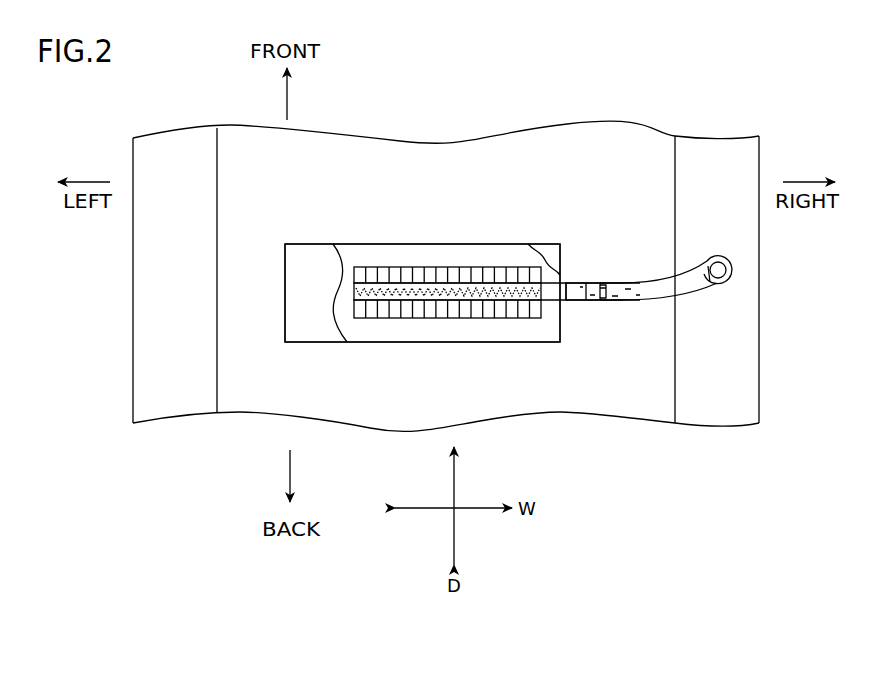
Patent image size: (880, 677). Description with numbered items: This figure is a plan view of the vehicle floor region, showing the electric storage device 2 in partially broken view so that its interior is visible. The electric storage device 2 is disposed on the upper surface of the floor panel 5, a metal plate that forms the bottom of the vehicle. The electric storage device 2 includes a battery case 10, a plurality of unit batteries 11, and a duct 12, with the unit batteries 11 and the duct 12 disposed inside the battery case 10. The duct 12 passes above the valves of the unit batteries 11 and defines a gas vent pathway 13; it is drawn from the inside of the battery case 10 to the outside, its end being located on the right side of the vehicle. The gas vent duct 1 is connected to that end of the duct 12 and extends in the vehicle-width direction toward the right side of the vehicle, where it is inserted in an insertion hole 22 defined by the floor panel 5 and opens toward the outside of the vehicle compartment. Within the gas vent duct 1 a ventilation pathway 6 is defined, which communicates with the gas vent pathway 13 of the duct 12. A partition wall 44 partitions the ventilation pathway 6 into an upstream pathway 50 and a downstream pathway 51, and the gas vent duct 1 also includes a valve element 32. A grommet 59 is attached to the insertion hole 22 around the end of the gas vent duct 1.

The gas vent duct 1 is at (654, 287).
The electric storage device 2 is at (482, 65).
The floor panel 5 is at (369, 413).
The ventilation pathway 6 is at (628, 468).
The battery case 10 is at (409, 244).
The unit batteries 11 is at (442, 267).
The duct 12 is at (473, 275).
The gas vent pathway 13 is at (523, 277).
The insertion hole 22 is at (727, 270).
The valve element 32 is at (610, 285).
The partition wall 44 is at (593, 281).
The upstream pathway 50 is at (575, 302).
The downstream pathway 51 is at (640, 302).
The grommet 59 is at (724, 282).